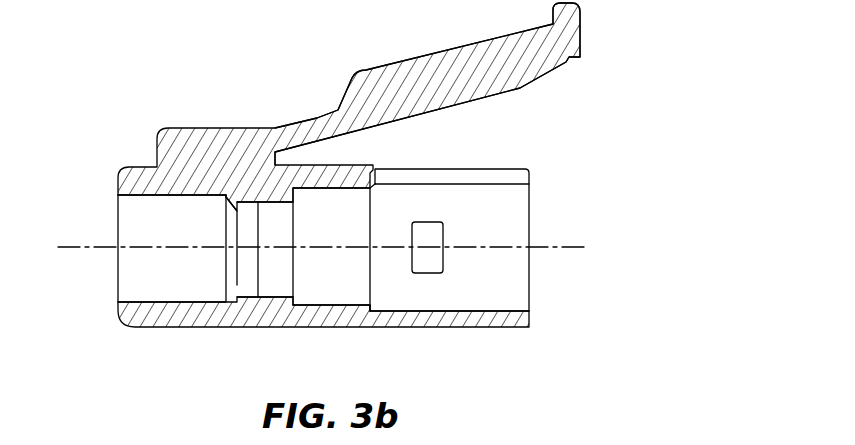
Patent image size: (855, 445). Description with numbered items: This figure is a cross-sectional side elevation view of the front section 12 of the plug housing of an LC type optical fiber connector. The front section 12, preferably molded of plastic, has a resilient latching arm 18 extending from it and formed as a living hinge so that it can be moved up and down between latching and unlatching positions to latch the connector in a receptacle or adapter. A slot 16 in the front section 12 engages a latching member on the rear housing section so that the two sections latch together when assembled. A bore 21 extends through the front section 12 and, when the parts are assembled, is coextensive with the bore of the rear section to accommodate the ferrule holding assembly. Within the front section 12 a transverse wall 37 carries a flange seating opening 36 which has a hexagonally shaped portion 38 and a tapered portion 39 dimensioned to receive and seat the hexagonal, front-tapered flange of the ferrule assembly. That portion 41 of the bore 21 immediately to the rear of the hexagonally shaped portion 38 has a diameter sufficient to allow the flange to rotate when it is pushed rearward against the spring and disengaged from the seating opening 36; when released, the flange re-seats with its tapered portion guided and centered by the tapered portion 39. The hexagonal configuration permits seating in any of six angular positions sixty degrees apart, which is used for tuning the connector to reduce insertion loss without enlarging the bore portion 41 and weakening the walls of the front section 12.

The front section 12 is at (142, 165).
The resilient latching arm 18 is at (443, 51).
The transverse wall 37 is at (248, 206).
The hexagonally shaped portion 38 is at (281, 203).
The slot 16 is at (432, 234).
The tapered portion 39 is at (248, 290).
The bore 21 is at (153, 302).
The flange seating opening 36 is at (275, 280).
The bore portion 41 is at (346, 305).